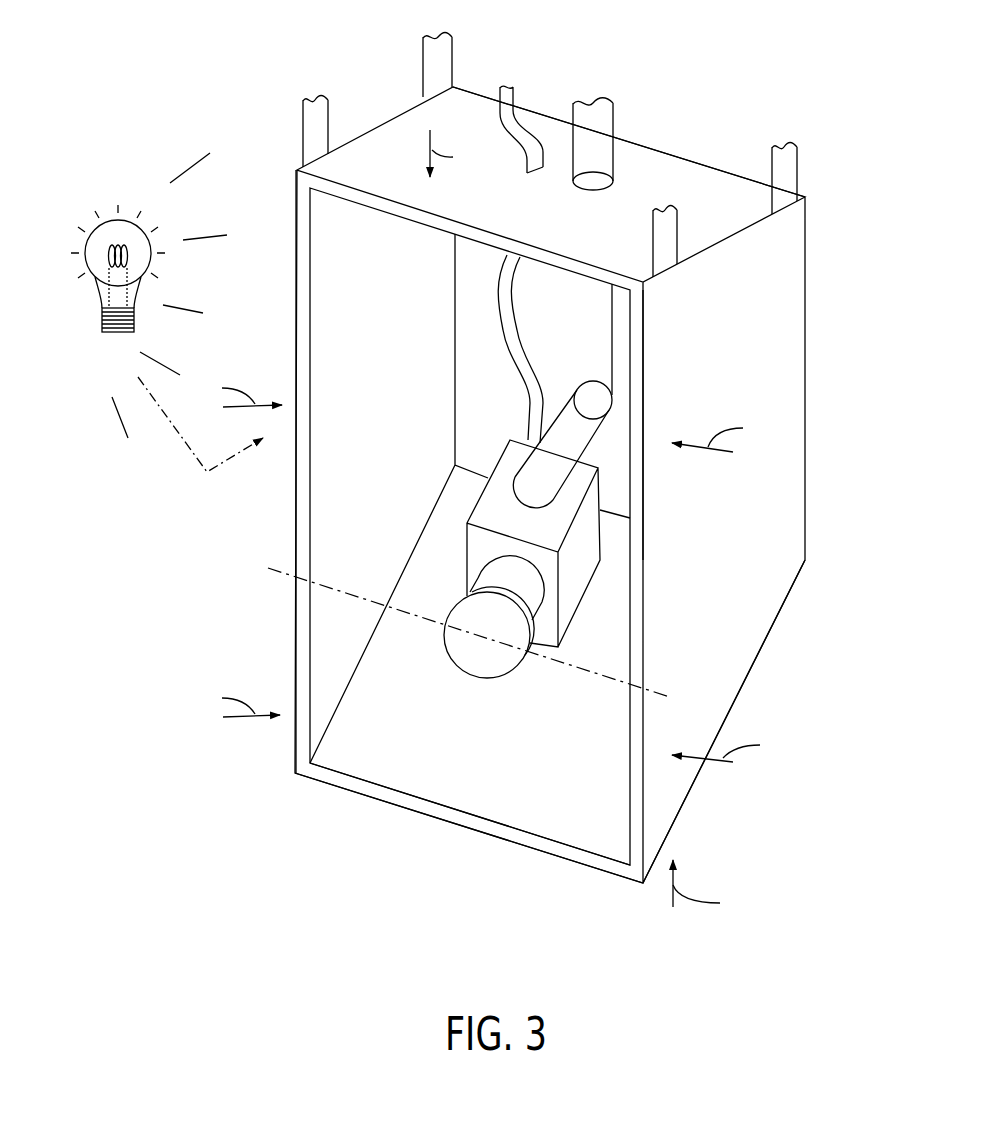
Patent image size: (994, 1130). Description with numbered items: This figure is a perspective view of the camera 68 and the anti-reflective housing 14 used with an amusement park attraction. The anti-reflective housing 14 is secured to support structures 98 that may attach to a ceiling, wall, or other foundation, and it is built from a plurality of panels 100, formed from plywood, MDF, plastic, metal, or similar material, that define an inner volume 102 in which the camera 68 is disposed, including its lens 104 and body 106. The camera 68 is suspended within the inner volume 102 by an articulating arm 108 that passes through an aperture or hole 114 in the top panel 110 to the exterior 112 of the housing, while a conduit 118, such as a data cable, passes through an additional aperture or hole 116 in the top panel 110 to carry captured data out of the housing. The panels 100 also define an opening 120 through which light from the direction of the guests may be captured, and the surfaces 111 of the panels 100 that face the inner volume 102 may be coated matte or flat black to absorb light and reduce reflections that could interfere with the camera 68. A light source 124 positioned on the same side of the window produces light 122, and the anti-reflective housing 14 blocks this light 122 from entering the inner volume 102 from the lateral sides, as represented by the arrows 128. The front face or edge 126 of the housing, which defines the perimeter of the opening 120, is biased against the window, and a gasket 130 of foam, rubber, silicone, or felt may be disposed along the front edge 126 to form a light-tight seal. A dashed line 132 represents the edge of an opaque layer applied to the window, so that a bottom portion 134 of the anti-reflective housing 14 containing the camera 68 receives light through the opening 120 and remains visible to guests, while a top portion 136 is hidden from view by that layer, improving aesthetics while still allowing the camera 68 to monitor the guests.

The anti-reflective housing 14 is at (712, 163).
The camera 68 is at (488, 513).
The support structures 98 is at (427, 57).
The panels 100 is at (387, 147).
The inner volume 102 is at (397, 457).
The lens 104 is at (478, 662).
The body 106 is at (547, 565).
The articulating arm 108 is at (603, 330).
The top panel 110 is at (645, 168).
The surfaces 111 is at (397, 311).
The exterior 112 is at (636, 66).
The aperture or hole 114 is at (593, 190).
The additional aperture or hole 116 is at (537, 173).
The conduit 118 is at (527, 127).
The opening 120 is at (360, 745).
The light 122 is at (190, 168).
The light source 124 is at (100, 215).
The front face or edge 126 is at (645, 785).
The arrows 128 is at (490, 523).
The gasket 130 is at (648, 325).
The dashed line 132 is at (658, 693).
The bottom portion 134 is at (462, 778).
The top portion 136 is at (720, 587).